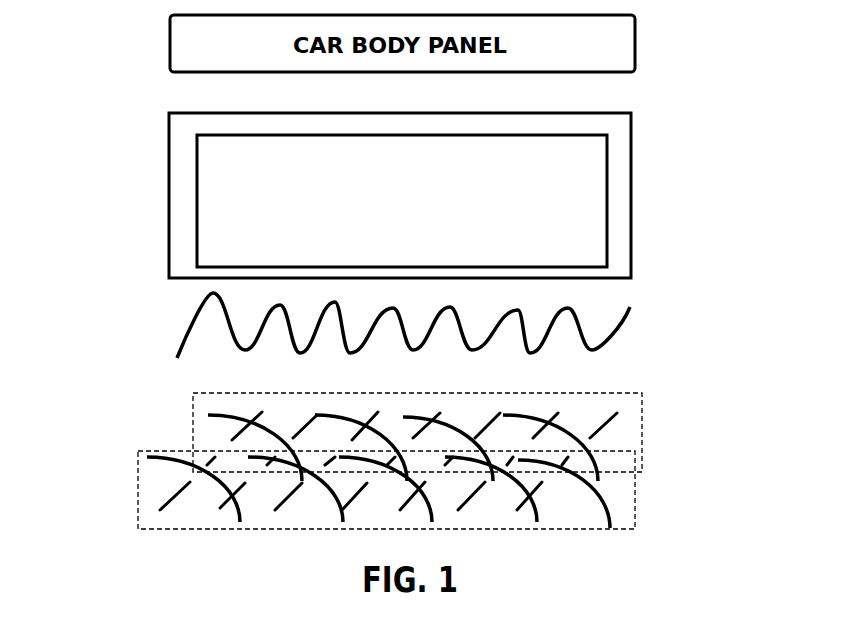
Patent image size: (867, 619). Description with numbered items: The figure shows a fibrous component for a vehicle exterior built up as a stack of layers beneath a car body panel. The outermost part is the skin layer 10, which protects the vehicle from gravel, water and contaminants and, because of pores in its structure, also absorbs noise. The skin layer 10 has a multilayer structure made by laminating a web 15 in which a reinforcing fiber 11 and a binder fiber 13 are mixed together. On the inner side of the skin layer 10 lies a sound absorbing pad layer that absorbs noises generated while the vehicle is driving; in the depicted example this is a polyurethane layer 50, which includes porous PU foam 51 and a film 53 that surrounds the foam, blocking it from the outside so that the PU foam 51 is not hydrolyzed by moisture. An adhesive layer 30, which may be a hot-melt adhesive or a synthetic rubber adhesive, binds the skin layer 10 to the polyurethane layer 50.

The skin layer 10 is at (410, 444).
The reinforcing fiber 11 is at (607, 510).
The binder fiber 13 is at (603, 428).
The web 15 is at (193, 417).
The adhesive layer 30 is at (627, 318).
The polyurethane layer 50 is at (472, 195).
The porous PU foam 51 is at (599, 191).
The film 53 is at (620, 165).